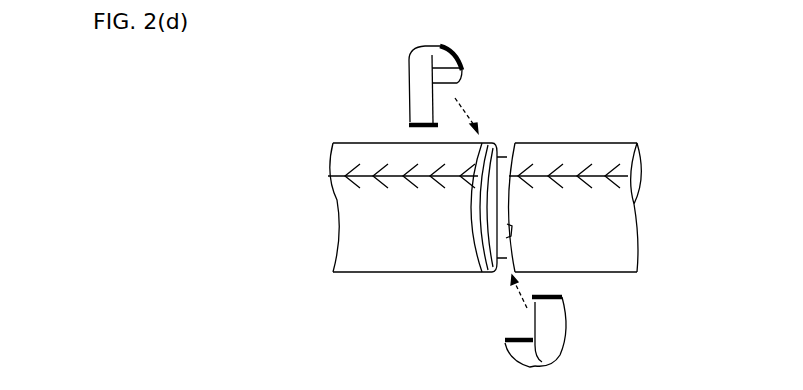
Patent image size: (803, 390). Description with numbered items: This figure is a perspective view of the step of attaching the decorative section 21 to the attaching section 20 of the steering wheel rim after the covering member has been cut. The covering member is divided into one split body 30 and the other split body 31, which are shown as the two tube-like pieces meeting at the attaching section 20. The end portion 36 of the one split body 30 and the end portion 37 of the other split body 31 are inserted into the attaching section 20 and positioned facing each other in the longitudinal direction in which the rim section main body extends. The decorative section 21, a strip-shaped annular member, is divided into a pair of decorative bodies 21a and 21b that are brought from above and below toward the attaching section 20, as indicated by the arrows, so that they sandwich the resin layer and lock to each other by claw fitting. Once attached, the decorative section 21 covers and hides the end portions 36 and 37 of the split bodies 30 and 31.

The attaching section 20 is at (502, 155).
The decorative section 21 is at (465, 52).
The decorative body 21a is at (410, 63).
The decorative body 21b is at (532, 367).
The one split body 30 is at (352, 227).
The other split body 31 is at (632, 233).
The end portion 36 is at (486, 232).
The end portion 37 is at (511, 231).